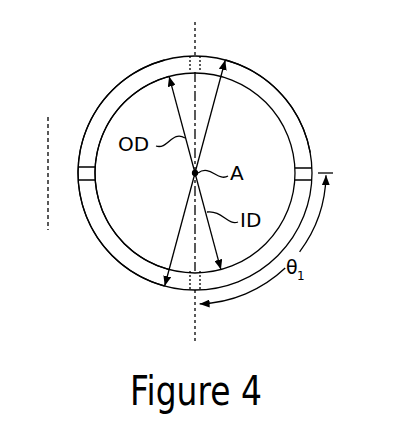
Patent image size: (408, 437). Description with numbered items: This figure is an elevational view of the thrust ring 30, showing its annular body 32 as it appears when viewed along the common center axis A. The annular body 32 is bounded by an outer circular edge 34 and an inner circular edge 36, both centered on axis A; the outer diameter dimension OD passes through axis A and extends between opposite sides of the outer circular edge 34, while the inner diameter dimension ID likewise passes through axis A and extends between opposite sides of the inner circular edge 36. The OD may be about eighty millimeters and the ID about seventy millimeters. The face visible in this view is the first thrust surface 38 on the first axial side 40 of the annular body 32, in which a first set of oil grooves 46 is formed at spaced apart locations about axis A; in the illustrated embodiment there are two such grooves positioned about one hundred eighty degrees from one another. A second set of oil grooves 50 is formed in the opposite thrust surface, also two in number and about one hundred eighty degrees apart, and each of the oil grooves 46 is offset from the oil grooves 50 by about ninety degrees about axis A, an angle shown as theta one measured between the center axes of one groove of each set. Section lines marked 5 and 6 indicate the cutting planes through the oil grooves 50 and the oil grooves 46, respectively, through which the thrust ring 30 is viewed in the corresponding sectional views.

The thrust ring 30 is at (321, 81).
The annular body 32 is at (297, 100).
The outer circular edge 34 is at (99, 102).
The inner circular edge 36 is at (129, 102).
The first thrust surface 38 is at (122, 251).
The first axial side 40 is at (258, 66).
The first set of oil grooves 46 is at (86, 170).
The second set of oil grooves 50 is at (203, 55).
The section line 5- 5 is at (222, 19).
The section line 6- 6 is at (78, 117).